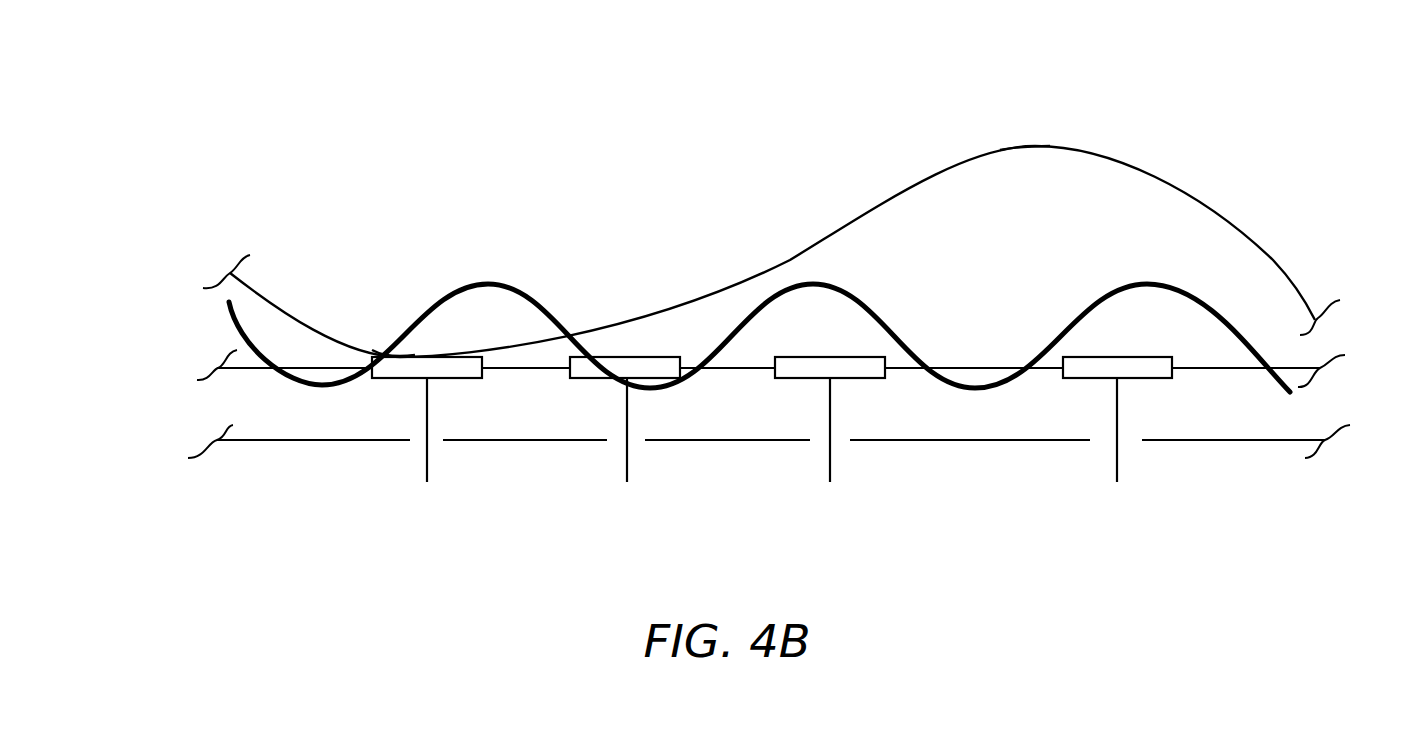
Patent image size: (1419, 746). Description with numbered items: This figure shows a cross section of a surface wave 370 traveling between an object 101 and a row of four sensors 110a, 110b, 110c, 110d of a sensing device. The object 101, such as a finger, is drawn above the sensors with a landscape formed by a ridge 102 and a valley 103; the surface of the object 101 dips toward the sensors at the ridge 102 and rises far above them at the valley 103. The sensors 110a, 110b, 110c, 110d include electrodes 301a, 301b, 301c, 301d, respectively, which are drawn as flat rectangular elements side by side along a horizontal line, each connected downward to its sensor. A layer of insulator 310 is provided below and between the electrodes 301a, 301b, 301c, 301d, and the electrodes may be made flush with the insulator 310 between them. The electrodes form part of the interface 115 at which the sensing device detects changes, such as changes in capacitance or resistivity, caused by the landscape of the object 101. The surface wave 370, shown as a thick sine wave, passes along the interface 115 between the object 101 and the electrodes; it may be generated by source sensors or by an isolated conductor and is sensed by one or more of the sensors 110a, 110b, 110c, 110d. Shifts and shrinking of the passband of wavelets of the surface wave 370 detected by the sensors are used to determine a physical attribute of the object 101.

The object 101 is at (1180, 183).
The ridge 102 is at (368, 308).
The valley 103 is at (1032, 146).
The interface 115 is at (1270, 362).
The insulator 310 is at (202, 395).
The surface wave 370 is at (862, 288).
The electrode 301a is at (396, 380).
The electrode 301b is at (582, 380).
The electrode 301c is at (787, 380).
The electrode 301d is at (1075, 380).
The sensor 110a is at (453, 475).
The sensor 110b is at (653, 475).
The sensor 110c is at (853, 475).
The sensor 110d is at (1143, 475).